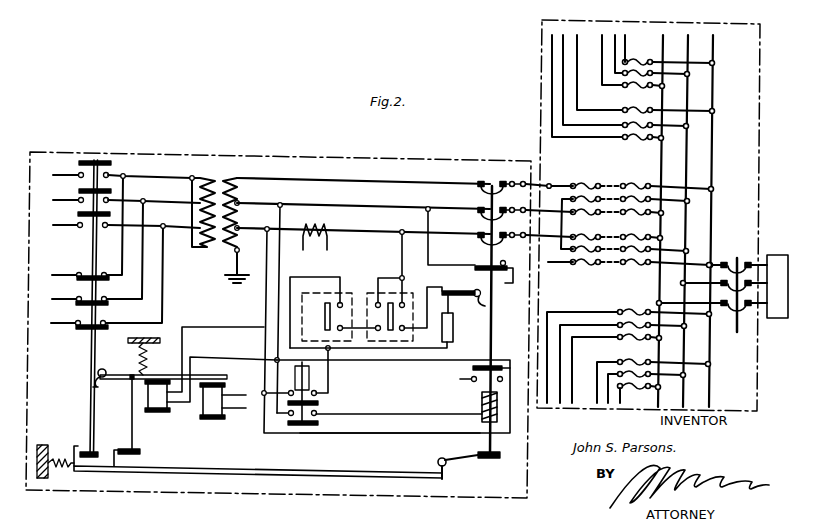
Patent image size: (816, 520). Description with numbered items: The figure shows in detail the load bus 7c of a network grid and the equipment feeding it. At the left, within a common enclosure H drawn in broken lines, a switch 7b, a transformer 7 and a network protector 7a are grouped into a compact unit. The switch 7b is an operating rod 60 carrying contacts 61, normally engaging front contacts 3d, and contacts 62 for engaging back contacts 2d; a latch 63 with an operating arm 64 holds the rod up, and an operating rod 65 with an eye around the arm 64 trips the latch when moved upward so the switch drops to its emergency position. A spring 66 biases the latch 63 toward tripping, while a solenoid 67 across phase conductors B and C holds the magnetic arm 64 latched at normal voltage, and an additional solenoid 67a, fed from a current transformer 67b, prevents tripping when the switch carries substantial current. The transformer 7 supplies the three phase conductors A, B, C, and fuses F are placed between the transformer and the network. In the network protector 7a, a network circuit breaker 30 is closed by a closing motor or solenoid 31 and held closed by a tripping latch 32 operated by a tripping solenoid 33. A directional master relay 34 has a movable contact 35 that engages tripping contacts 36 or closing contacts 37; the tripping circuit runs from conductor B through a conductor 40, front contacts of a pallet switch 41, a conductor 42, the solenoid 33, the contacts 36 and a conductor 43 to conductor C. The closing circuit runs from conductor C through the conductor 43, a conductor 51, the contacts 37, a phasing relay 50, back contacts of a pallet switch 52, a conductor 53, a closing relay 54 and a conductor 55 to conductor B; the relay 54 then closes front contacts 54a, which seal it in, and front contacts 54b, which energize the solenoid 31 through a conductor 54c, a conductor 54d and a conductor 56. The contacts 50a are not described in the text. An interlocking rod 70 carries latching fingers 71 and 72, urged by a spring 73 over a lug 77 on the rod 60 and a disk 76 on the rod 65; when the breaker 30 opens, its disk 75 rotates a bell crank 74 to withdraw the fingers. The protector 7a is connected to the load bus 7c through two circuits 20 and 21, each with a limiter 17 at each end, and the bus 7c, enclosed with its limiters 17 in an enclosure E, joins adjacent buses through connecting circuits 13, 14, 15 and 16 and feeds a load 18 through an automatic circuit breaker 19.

The back contacts 2d is at (78, 173).
The front contacts 3d is at (76, 276).
The transformer 7 is at (278, 315).
The network protector 7a is at (368, 345).
The switch 7b is at (69, 308).
The load bus 7c is at (713, 140).
The connecting circuit 13 is at (611, 72).
The connecting circuit 14 is at (620, 36).
The connecting circuit 15 is at (565, 403).
The connecting circuit 16 is at (611, 403).
The limiter 17 is at (640, 268).
The load 18 is at (777, 254).
The automatic circuit breaker 19 is at (737, 262).
The circuit 20 is at (602, 237).
The circuit 21 is at (604, 183).
The network circuit breaker 30 is at (491, 318).
The closing motor or solenoid 31 is at (482, 405).
The tripping latch 32 is at (453, 304).
The tripping solenoid 33 is at (452, 336).
The directional master relay 34 is at (381, 310).
The movable contact 35 is at (402, 340).
The tripping contacts 36 is at (447, 350).
The closing contacts 37 is at (390, 344).
The conductor 40 is at (430, 266).
The pallet switch 41 is at (501, 262).
The conductor 42 is at (513, 283).
The conductor 43 is at (403, 266).
The phasing relay 50 is at (332, 312).
The contacts 50a is at (472, 368).
The conductor 51 is at (370, 292).
The pallet switch 52 is at (498, 366).
The conductor 53 is at (460, 381).
The closing relay 54 is at (312, 372).
The front contacts 54a is at (318, 392).
The front contacts 54b is at (318, 415).
The conductor 54c is at (264, 300).
The conductor 54d is at (390, 435).
The conductor 55 is at (296, 257).
The conductor 56 is at (420, 420).
The operating rod 60 is at (88, 347).
The contacts 61 is at (99, 276).
The contacts 62 is at (102, 161).
The latch 63 is at (118, 382).
The operating arm 64 is at (160, 375).
The operating rod 65 is at (134, 432).
The spring 66 is at (136, 353).
The solenoid 67 is at (162, 412).
The solenoid 67a is at (212, 422).
The current transformer 67b is at (314, 250).
The interlocking rod 70 is at (280, 467).
The latching finger 71 is at (72, 445).
The latching finger 72 is at (116, 448).
The spring 73 is at (62, 469).
The bell crank 74 is at (455, 466).
The disk 75 is at (496, 460).
The disk 76 is at (142, 452).
The lug 77 is at (82, 450).
The phase conductor A is at (350, 180).
The phase conductor B is at (354, 207).
The phase conductor C is at (359, 232).
The enclosure E is at (540, 70).
The fuses F is at (517, 162).
The common enclosure H is at (323, 159).